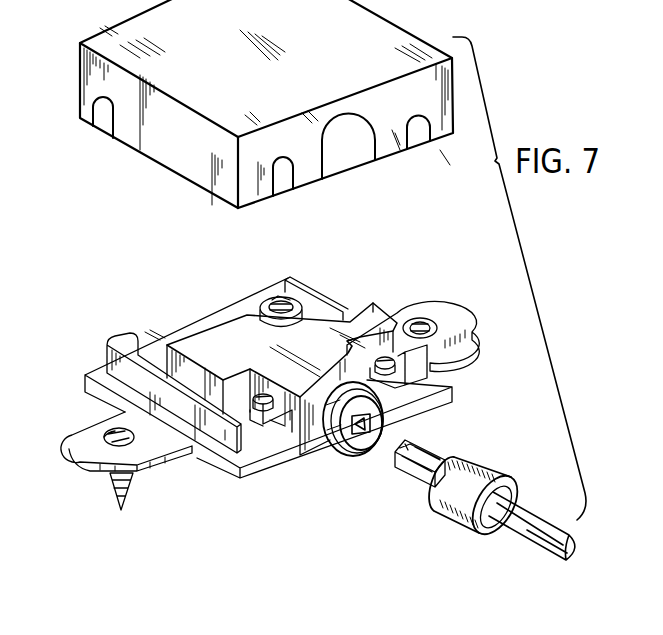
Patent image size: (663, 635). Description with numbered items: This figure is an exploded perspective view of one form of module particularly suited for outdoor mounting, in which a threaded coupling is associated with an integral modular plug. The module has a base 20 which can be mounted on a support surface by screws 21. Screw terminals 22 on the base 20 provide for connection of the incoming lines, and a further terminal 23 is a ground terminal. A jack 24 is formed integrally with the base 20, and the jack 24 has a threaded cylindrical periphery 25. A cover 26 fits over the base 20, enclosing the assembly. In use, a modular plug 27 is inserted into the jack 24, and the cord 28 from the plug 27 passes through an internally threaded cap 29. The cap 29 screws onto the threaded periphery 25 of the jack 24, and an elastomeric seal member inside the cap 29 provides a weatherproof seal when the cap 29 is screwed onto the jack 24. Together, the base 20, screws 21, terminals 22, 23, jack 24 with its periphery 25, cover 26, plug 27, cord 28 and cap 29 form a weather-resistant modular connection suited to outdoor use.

The base 20 is at (233, 338).
The screws 21 is at (103, 441).
The screw terminals 22 is at (290, 437).
The ground terminal 23 is at (288, 283).
The jack 24 is at (440, 400).
The threaded cylindrical periphery 25 is at (335, 447).
The cover 26 is at (447, 122).
The modular plug 27 is at (410, 472).
The cord 28 is at (520, 537).
The internally threaded cap 29 is at (447, 517).